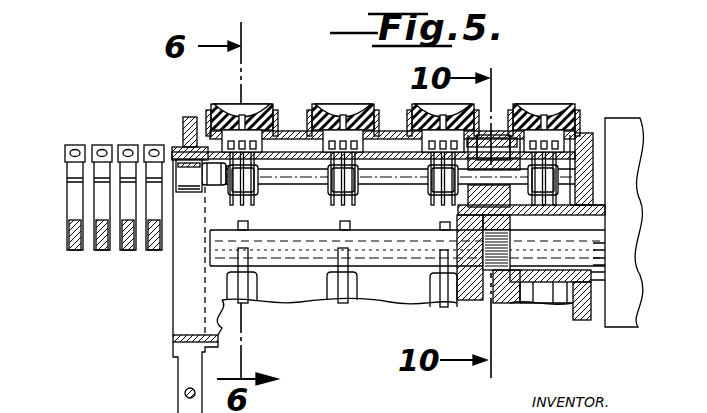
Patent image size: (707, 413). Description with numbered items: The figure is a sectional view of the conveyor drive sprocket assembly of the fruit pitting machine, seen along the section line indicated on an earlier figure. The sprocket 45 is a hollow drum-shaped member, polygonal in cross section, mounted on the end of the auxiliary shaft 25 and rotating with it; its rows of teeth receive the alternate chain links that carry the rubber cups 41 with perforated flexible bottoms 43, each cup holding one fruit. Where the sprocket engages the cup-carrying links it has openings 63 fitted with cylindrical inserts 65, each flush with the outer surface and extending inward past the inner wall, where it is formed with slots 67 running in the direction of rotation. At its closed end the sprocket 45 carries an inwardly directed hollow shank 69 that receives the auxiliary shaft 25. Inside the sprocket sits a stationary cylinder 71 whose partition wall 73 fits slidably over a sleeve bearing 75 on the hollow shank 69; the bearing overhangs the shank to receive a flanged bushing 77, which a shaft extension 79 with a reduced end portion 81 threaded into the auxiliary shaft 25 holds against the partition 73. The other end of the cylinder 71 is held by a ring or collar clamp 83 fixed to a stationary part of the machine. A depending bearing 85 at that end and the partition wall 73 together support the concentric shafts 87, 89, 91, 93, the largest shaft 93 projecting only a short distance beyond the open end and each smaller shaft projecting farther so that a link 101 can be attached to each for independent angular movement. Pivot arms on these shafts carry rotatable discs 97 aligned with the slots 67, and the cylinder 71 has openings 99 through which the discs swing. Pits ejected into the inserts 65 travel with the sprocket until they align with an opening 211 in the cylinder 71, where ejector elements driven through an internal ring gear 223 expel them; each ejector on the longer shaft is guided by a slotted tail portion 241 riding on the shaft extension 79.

The auxiliary shaft 25 is at (585, 229).
The rubber cup 41 is at (254, 112).
The perforated flexible bottom 43 is at (342, 112).
The sprocket 45 is at (413, 135).
The openings 63 is at (234, 112).
The cylindrical insert 65 is at (327, 142).
The slots 67 is at (578, 134).
The hollow shank 69 is at (556, 302).
The stationary cylinder 71 is at (213, 287).
The partition wall 73 is at (499, 304).
The sleeve bearing 75 is at (522, 284).
The flanged bushing 77 is at (458, 213).
The shaft extension 79 is at (286, 258).
The reduced end portion 81 is at (458, 300).
The ring or collar clamp 83 is at (187, 362).
The depending bearing 85 is at (190, 192).
The concentric shaft 87 is at (80, 145).
The concentric shaft 89 is at (106, 145).
The concentric shaft 91 is at (130, 145).
The concentric shaft 93 is at (158, 145).
The rotatable discs 97 is at (256, 200).
The openings 99 is at (230, 190).
The link 101 is at (77, 204).
The opening 211 is at (355, 293).
The internal ring gear 223 is at (505, 134).
The slotted tail portion 241 is at (338, 277).